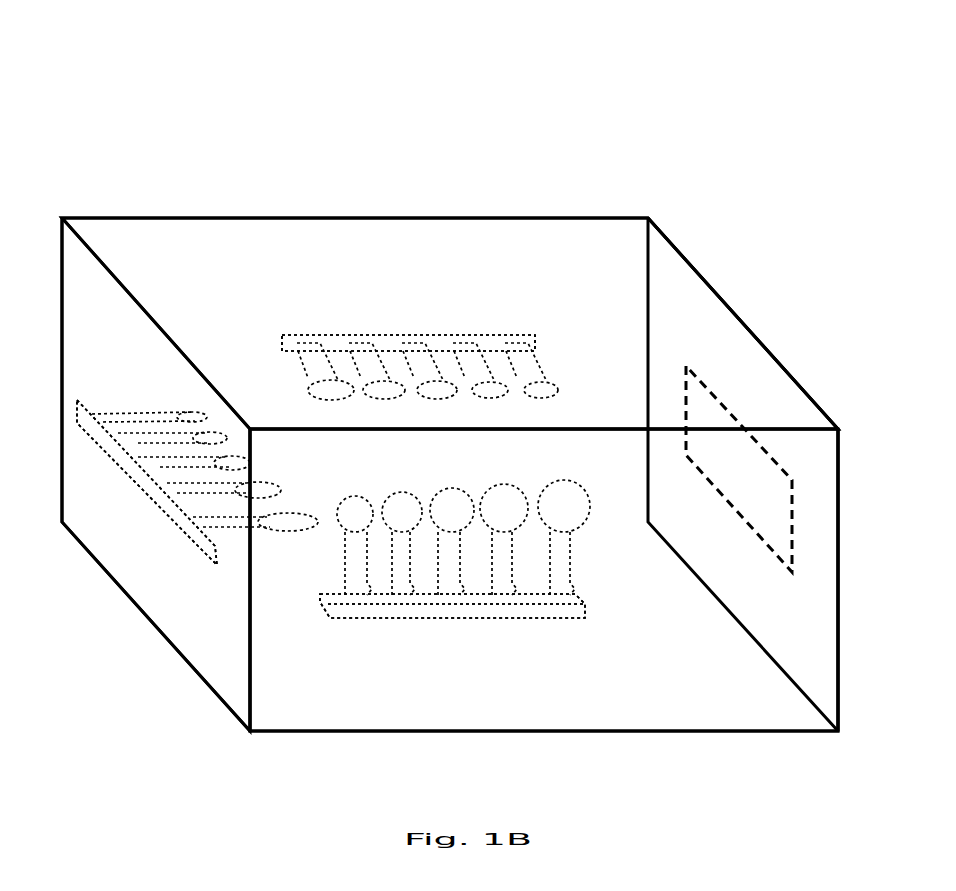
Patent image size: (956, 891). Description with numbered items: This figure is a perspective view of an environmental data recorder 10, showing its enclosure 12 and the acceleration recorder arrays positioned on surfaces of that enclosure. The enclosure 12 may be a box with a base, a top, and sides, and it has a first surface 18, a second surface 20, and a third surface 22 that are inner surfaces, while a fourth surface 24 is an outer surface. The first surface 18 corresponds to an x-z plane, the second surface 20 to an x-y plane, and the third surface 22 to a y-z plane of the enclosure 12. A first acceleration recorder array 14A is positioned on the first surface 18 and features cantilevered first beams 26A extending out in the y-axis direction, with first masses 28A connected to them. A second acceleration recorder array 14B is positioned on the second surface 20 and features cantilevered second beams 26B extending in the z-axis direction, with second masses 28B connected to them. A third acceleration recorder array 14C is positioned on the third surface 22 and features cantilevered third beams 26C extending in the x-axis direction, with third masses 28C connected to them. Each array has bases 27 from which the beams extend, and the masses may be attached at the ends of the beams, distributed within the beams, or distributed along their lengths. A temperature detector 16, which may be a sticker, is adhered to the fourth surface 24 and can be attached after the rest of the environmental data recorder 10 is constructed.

The environmental data recorder 10 is at (195, 90).
The enclosure 12 is at (218, 247).
The first acceleration recorder array 14A is at (489, 615).
The second acceleration recorder array 14B is at (196, 449).
The third acceleration recorder array 14C is at (397, 282).
The temperature detector 16 is at (738, 480).
The first surface 18 is at (584, 667).
The second surface 20 is at (96, 494).
The third surface 22 is at (535, 280).
The fourth surface 24 is at (713, 341).
The first beams 26A is at (582, 563).
The second beams 26B is at (240, 543).
The third beams 26C is at (308, 366).
The bases 27 is at (566, 612).
The first masses 28A is at (568, 470).
The second masses 28B is at (300, 506).
The third masses 28C is at (355, 403).